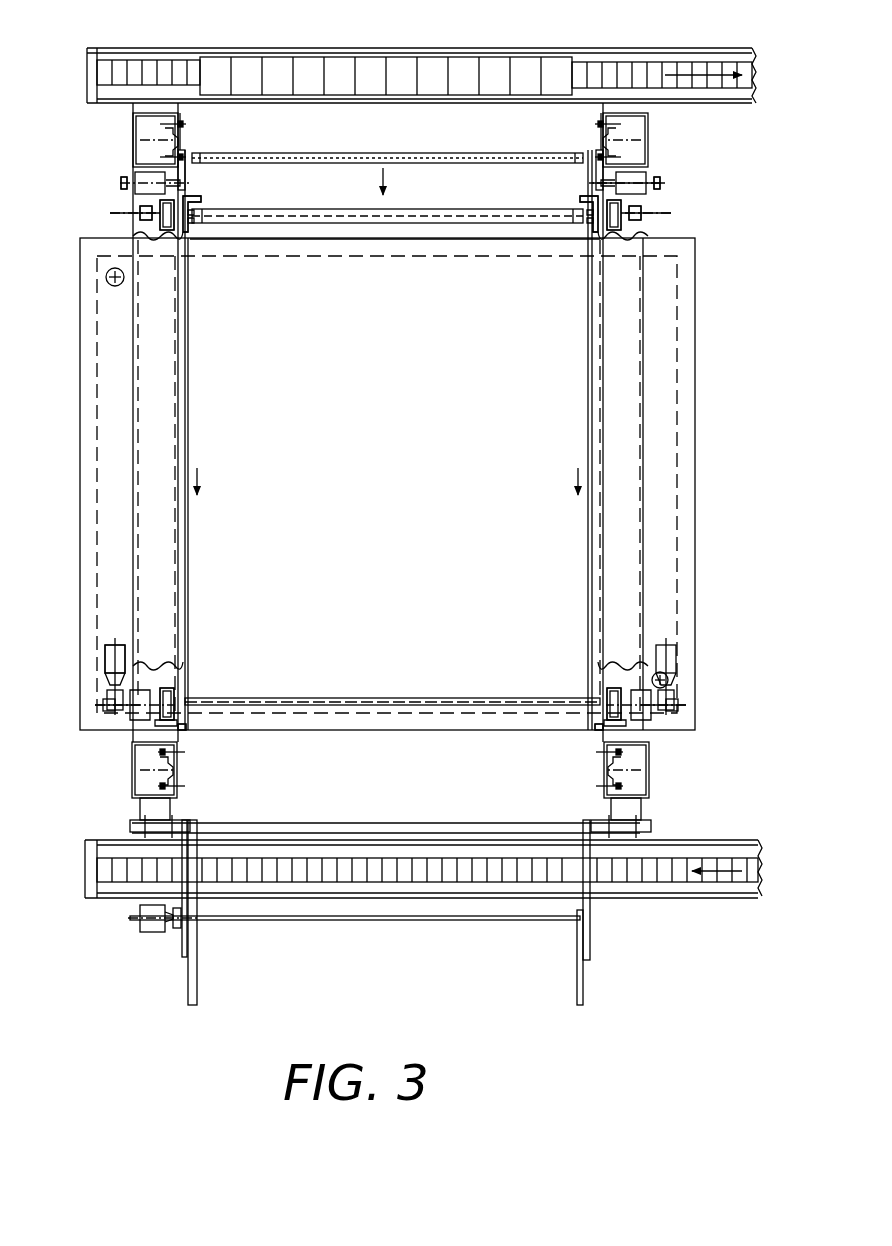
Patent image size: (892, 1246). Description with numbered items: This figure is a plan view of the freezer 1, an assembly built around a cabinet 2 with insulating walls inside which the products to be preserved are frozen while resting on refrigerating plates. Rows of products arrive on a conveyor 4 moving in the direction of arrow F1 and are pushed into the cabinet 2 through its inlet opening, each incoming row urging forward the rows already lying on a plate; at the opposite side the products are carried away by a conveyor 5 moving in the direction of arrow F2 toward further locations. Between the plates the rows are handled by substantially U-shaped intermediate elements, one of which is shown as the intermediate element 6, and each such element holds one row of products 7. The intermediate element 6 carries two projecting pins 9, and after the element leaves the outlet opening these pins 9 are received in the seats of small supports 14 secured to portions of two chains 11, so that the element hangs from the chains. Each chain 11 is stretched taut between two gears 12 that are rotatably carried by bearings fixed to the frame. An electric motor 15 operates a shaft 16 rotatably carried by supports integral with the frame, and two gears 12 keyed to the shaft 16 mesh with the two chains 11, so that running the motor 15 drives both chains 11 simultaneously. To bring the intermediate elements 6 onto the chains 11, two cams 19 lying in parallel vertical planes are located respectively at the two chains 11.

The freezer 1 is at (697, 452).
The cabinet 2 is at (668, 328).
The conveyor 4 is at (658, 838).
The conveyor 5 is at (601, 46).
The intermediate element 6 is at (427, 157).
The row of products 7 is at (253, 72).
The projecting pin 9 is at (200, 210).
The chain 11 is at (145, 236).
The gear 12 is at (172, 220).
The small support 14 is at (640, 186).
The electric motor 15 is at (105, 665).
The shaft 16 is at (284, 700).
The cam 19 is at (200, 168).
The direction of incoming products F1 is at (720, 868).
The direction of outgoing products F2 is at (718, 76).